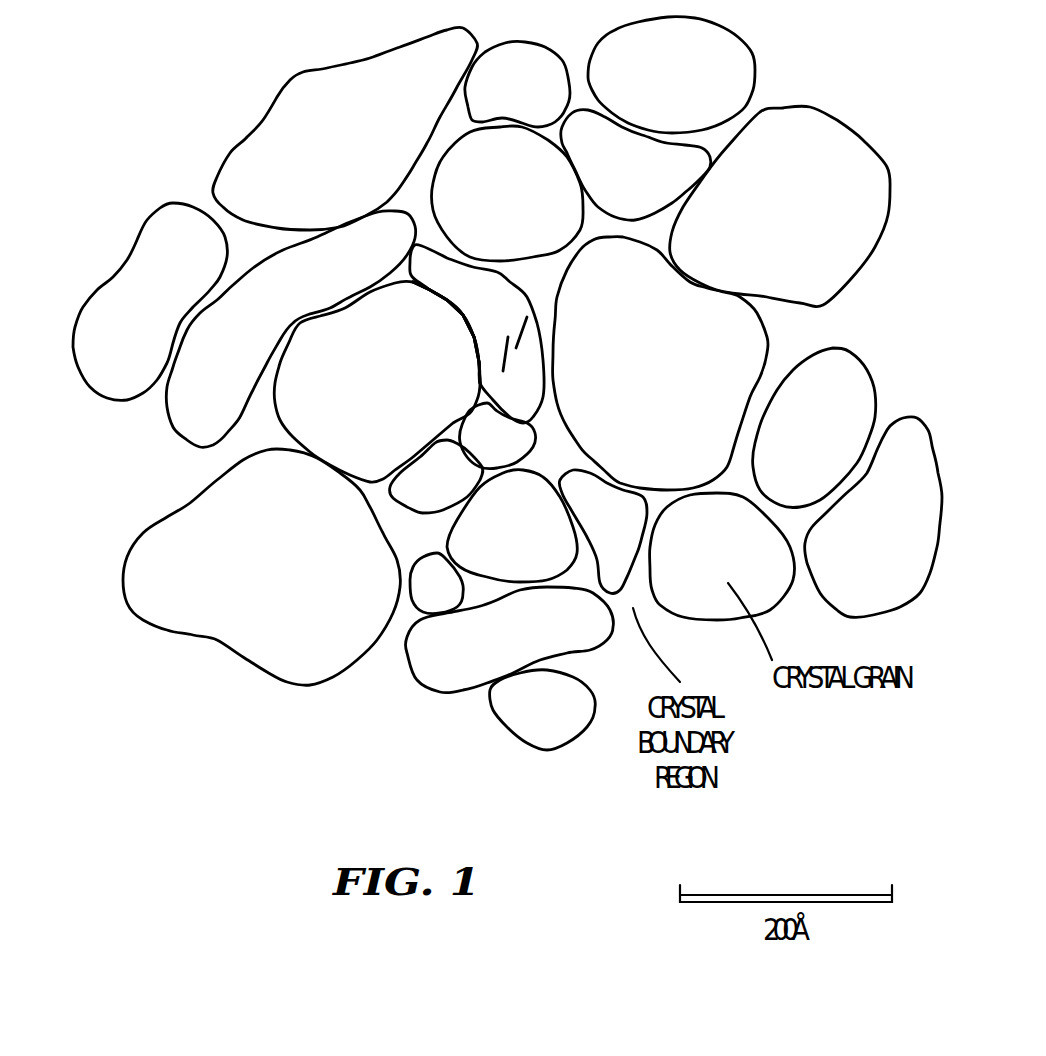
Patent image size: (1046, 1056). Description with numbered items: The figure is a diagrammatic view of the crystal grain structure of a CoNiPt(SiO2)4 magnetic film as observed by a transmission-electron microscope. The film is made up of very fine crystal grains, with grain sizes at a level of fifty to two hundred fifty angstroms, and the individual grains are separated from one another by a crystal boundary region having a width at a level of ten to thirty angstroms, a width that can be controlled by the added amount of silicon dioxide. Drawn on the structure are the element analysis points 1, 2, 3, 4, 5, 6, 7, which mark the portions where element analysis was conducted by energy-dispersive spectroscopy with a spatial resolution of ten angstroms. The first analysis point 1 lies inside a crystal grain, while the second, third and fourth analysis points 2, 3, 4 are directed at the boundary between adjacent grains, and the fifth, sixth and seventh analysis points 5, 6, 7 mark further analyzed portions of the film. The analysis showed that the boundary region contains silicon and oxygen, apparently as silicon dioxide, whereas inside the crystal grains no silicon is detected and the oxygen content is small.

The element analysis point 1 is at (400, 402).
The element analysis point 2 is at (453, 378).
The element analysis point 3 is at (465, 373).
The element analysis point 4 is at (477, 368).
The element analysis point 5 is at (497, 365).
The element analysis point 6 is at (503, 371).
The element analysis point 7 is at (516, 348).